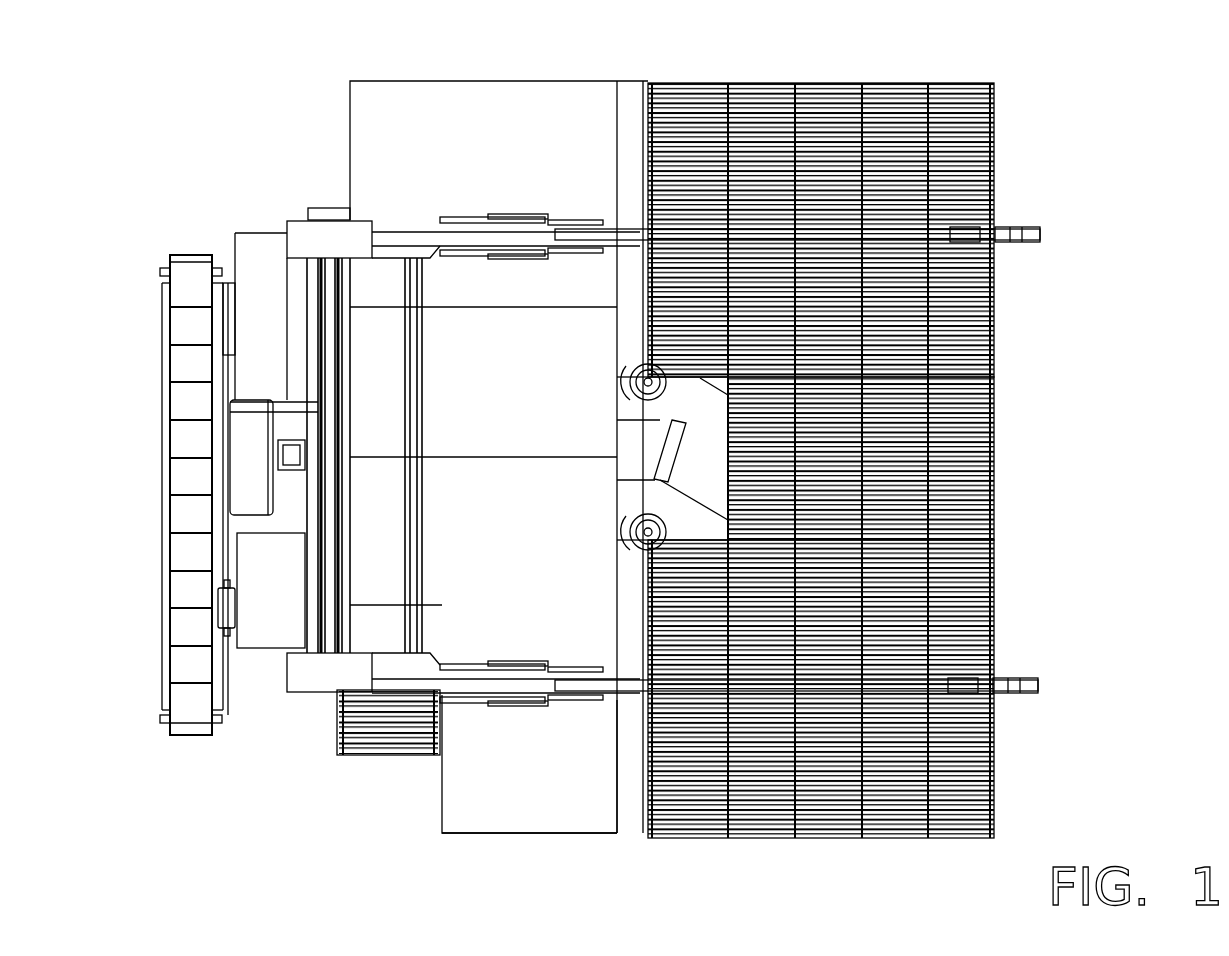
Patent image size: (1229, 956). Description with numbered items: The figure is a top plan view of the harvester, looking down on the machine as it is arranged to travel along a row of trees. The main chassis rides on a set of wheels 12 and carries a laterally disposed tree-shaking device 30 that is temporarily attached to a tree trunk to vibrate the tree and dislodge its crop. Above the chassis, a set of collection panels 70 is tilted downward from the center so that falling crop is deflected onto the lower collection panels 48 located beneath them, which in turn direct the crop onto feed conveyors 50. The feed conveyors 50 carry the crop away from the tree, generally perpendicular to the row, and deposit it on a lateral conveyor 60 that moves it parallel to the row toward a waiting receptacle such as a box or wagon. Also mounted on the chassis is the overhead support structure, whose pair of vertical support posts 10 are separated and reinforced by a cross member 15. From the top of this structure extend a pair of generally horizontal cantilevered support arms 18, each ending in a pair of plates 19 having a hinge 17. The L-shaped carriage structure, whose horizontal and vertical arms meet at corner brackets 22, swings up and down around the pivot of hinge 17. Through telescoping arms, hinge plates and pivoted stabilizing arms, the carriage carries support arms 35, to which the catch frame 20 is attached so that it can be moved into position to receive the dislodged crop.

The vertical support post 10 is at (283, 217).
The wheel 12 is at (240, 503).
The cross member 15 is at (405, 482).
The hinge 17 is at (588, 214).
The cantilevered support arm 18 is at (405, 212).
The plate 19 is at (492, 214).
The catch frame 20 is at (998, 478).
The corner bracket 22 is at (636, 222).
The tree-shaking device 30 is at (632, 502).
The support arm 35 is at (996, 232).
The collection panel 48 is at (632, 822).
The feed conveyor 50 is at (226, 640).
The lateral conveyor 60 is at (160, 282).
The collection panel 70 is at (345, 140).